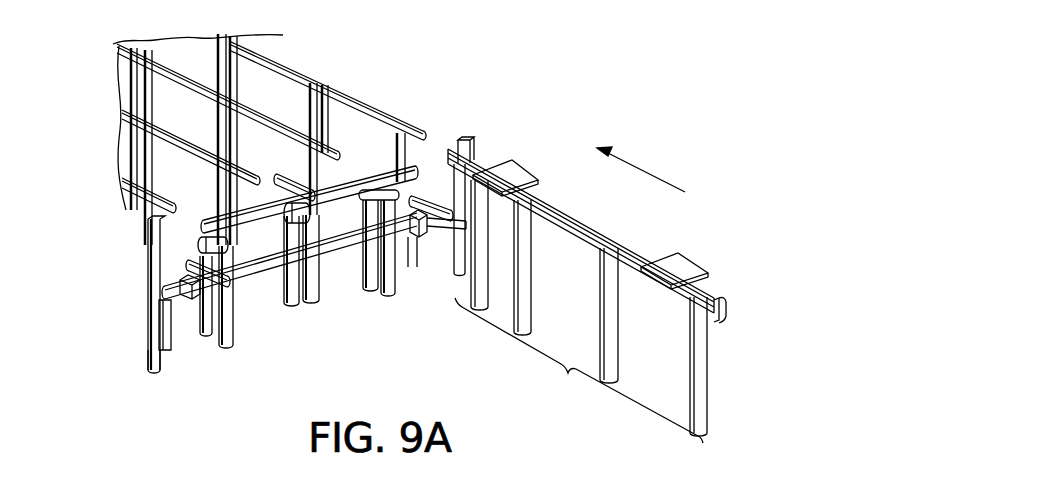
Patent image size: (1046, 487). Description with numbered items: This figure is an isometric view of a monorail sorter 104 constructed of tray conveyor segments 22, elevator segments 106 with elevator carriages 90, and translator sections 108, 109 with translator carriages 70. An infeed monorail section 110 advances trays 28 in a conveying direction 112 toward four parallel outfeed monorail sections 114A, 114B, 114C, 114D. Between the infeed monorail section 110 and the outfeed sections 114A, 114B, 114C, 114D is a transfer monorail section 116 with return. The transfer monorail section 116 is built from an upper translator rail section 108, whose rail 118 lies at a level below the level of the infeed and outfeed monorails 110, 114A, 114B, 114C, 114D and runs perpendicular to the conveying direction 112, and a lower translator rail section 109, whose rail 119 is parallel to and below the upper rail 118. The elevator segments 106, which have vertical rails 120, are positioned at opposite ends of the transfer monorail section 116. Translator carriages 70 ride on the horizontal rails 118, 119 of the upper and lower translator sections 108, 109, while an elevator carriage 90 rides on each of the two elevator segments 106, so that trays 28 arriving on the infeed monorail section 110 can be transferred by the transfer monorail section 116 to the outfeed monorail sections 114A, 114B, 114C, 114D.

The monorail sorter 104 is at (601, 71).
The tray conveyor segment 22 is at (588, 226).
The tray 28 is at (518, 170).
The translator carriage 70 is at (196, 305).
The elevator carriage 90 is at (172, 350).
The elevator segment 106 is at (148, 284).
The upper translator rail section 108 is at (366, 172).
The lower translator rail section 109 is at (346, 245).
The infeed monorail section 110 is at (580, 303).
The conveying direction 112 is at (640, 166).
The outfeed monorail section 114A is at (302, 62).
The outfeed monorail section 114B is at (198, 90).
The outfeed monorail section 114C is at (187, 153).
The outfeed monorail section 114D is at (133, 210).
The transfer monorail section 116 is at (297, 345).
The rail 118 is at (352, 188).
The rail 119 is at (258, 288).
The vertical rail 120 is at (150, 358).